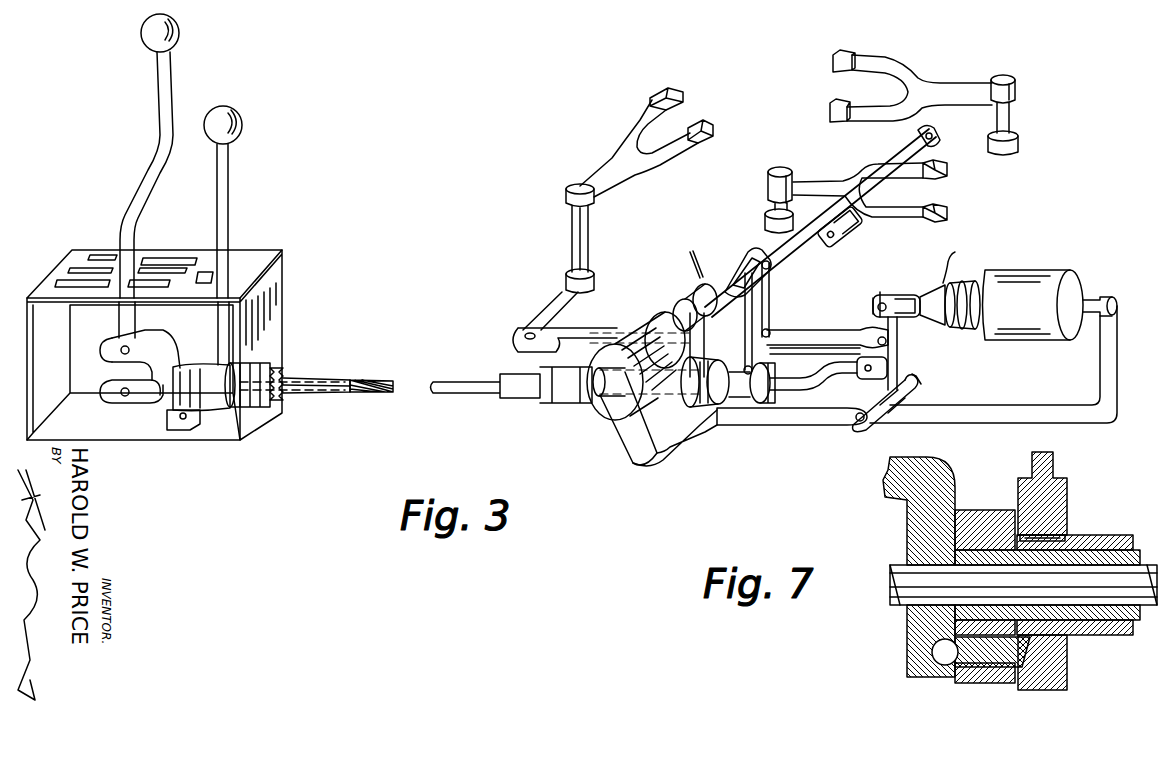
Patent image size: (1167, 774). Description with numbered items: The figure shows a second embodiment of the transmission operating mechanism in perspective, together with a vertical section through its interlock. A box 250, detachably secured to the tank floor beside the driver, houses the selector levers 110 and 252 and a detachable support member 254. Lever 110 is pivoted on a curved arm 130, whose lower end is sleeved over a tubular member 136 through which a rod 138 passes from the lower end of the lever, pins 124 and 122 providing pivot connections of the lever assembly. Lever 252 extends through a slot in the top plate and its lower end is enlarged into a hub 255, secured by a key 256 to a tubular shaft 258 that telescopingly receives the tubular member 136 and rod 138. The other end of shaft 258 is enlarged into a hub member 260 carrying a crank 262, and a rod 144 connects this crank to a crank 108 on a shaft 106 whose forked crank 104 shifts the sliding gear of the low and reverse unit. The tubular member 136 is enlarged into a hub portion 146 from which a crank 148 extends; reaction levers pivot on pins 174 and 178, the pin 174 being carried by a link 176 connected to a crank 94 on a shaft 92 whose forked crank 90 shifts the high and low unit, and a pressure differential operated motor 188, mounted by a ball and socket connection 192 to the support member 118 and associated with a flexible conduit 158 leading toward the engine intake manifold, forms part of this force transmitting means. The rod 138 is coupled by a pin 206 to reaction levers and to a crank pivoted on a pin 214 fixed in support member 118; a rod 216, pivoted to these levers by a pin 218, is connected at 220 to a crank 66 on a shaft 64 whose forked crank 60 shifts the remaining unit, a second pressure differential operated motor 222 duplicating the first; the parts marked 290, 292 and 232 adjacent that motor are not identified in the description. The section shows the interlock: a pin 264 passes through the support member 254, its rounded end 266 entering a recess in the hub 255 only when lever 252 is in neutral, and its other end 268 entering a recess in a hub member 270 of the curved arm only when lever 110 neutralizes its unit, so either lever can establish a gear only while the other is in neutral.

In FIG. 3, the selector lever 110 is at (163, 108).
In FIG. 3, the selector lever 252 is at (230, 193).
In FIG. 7, the selector lever 252 is at (1047, 465).
In FIG. 3, the box 250 is at (270, 298).
In FIG. 3, the curved arm 130 is at (167, 337).
In FIG. 7, the curved arm 130 is at (900, 492).
In FIG. 3, the pin 124 is at (125, 348).
In FIG. 3, the pin 122 is at (123, 392).
In FIG. 3, the hub portion 255 is at (230, 363).
In FIG. 7, the hub portion 255 is at (1053, 670).
In FIG. 3, the tubular shaft 258 is at (267, 368).
In FIG. 7, the tubular shaft 258 is at (1073, 537).
In FIG. 3, the tubular member 136 is at (325, 397).
In FIG. 7, the tubular member 136 is at (1117, 555).
In FIG. 3, the rod 138 is at (373, 388).
In FIG. 3, the support member 254 is at (177, 417).
In FIG. 7, the support member 254 is at (958, 512).
In FIG. 7, the key 256 is at (1022, 535).
In FIG. 3, the crank 60 is at (593, 175).
In FIG. 3, the shaft 64 is at (587, 222).
In FIG. 3, the crank 66 is at (560, 298).
In FIG. 3, the pivotal connection 220 is at (518, 343).
In FIG. 3, the pressure differential operated motor 188 is at (633, 327).
In FIG. 3, the flexible conduit 158 is at (687, 260).
In FIG. 3, the crank 90 is at (808, 182).
In FIG. 3, the shaft 92 is at (775, 192).
In FIG. 3, the crank 94 is at (775, 235).
In FIG. 3, the crank 104 is at (950, 83).
In FIG. 3, the shaft 106 is at (1013, 115).
In FIG. 3, the crank 108 is at (960, 147).
In FIG. 3, the rod 144 is at (913, 158).
In FIG. 3, the link 176 is at (820, 255).
In FIG. 3, the pin 174 is at (780, 287).
In FIG. 3, the pin 178 is at (772, 318).
In FIG. 3, the clevis 292 is at (883, 294).
In FIG. 3, the rod 290 is at (878, 297).
In FIG. 3, the nozzle 232 is at (952, 262).
In FIG. 3, the pressure differential operated motor 222 is at (1033, 273).
In FIG. 3, the ball and socket connection 192 is at (1097, 317).
In FIG. 3, the rod 216 is at (813, 337).
In FIG. 3, the pin 218 is at (890, 341).
In FIG. 3, the pin 214 is at (912, 377).
In FIG. 3, the pin 206 is at (868, 382).
In FIG. 3, the support member 118 is at (897, 417).
In FIG. 3, the crank 148 is at (768, 352).
In FIG. 3, the hub portion 146 is at (768, 367).
In FIG. 3, the crank 262 is at (712, 353).
In FIG. 3, the hub member 260 is at (697, 380).
In FIG. 7, the hub member 270 is at (918, 632).
In FIG. 7, the pin end 268 is at (955, 658).
In FIG. 7, the pin 264 is at (977, 657).
In FIG. 7, the pin end 266 is at (1027, 653).